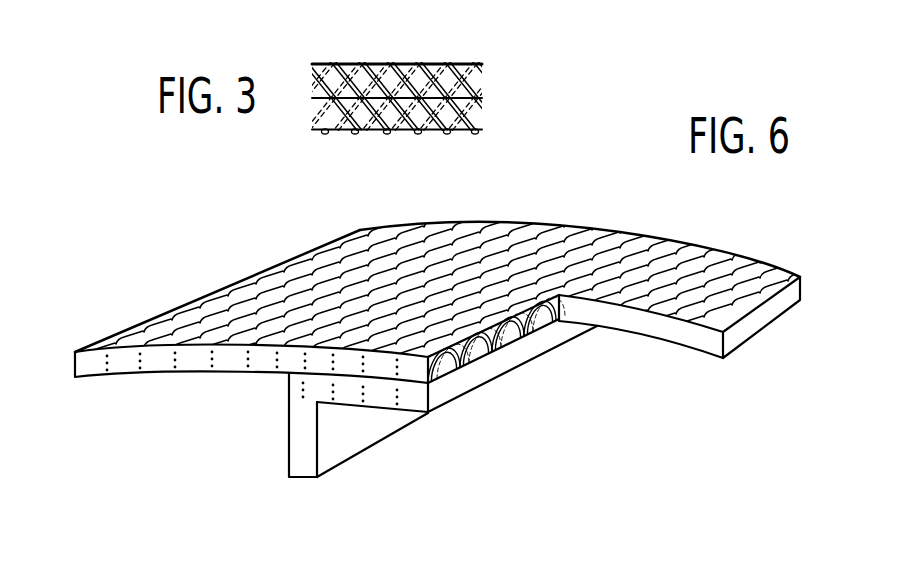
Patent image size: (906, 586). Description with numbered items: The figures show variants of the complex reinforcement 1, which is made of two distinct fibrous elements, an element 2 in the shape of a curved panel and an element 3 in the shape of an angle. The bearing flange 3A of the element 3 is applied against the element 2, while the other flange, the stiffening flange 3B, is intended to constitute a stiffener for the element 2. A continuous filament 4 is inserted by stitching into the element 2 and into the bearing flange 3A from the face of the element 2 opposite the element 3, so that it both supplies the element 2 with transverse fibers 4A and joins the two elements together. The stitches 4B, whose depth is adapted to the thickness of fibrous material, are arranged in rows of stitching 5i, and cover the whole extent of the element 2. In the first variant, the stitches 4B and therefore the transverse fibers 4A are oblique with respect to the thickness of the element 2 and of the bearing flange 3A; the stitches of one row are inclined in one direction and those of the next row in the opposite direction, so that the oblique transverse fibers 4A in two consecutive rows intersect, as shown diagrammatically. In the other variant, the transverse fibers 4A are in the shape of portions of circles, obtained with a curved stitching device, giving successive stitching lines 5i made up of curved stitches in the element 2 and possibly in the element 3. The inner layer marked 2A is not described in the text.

In FIG. 6, the complex reinforcement 1 is at (180, 325).
In FIG. 6, the fibrous element 2 is at (163, 360).
In FIG. 3, the woven fabric layer 2A is at (392, 83).
In FIG. 6, the woven fabric layer 2A is at (318, 362).
In FIG. 6, the fibrous element 3 is at (289, 445).
In FIG. 3, the bearing flange 3A is at (402, 123).
In FIG. 6, the bearing flange 3A is at (353, 392).
In FIG. 6, the stiffening flange 3B is at (303, 467).
In FIG. 6, the continuous filament 4 is at (620, 258).
In FIG. 3, the transverse fibers 4A is at (340, 118).
In FIG. 6, the transverse fibers 4A is at (482, 384).
In FIG. 3, the stitches 4B is at (450, 133).
In FIG. 6, the row of stitching 5i is at (720, 267).